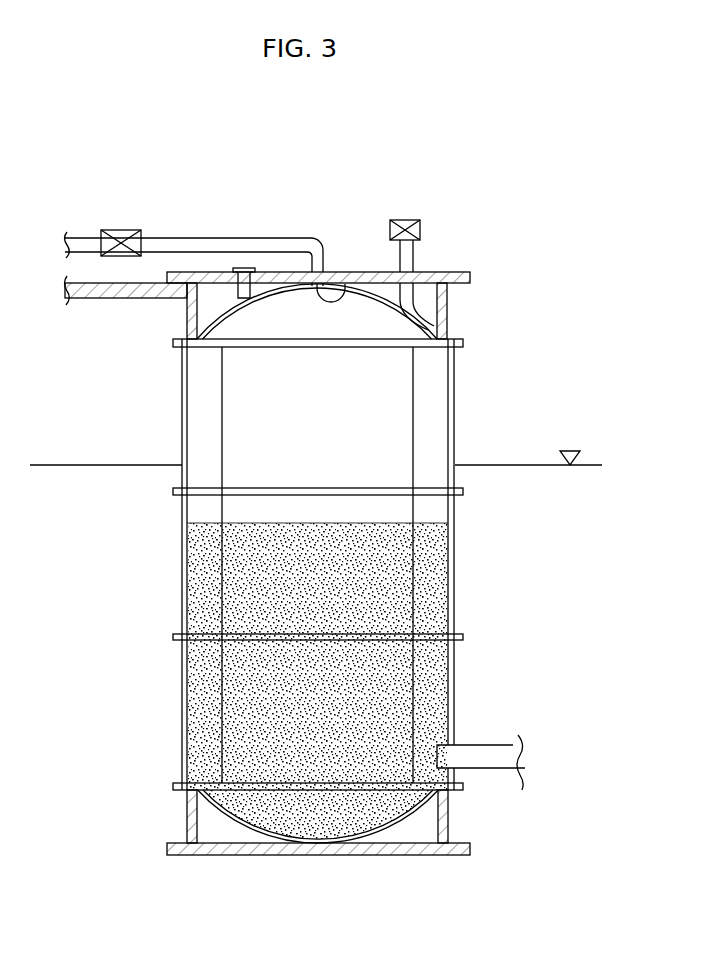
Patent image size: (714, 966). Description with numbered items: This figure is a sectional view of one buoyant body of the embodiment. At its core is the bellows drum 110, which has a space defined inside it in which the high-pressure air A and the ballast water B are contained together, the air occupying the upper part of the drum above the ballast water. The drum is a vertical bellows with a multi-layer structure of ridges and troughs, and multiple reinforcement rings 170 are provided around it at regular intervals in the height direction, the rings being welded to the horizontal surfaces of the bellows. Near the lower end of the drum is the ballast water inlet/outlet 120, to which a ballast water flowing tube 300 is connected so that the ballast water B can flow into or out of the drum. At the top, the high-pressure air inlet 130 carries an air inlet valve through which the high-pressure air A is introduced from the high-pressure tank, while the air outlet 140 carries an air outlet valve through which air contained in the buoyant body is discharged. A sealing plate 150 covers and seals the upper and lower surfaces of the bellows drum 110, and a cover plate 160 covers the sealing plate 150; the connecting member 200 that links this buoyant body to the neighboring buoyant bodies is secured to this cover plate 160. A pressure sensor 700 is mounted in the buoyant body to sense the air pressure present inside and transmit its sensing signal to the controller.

The bellows drum 110 is at (455, 408).
The ballast water inlet/outlet 120 is at (456, 757).
The high-pressure air inlet 130 is at (350, 272).
The air outlet 140 is at (435, 322).
The sealing plate 150 is at (384, 272).
The cover plate 160 is at (218, 280).
The reinforcement ring 170 is at (460, 636).
The connecting member 200 is at (110, 298).
The ballast water flowing tube 300 is at (498, 760).
The pressure sensor 700 is at (246, 270).
The high-pressure air A is at (240, 412).
The ballast water B is at (240, 585).